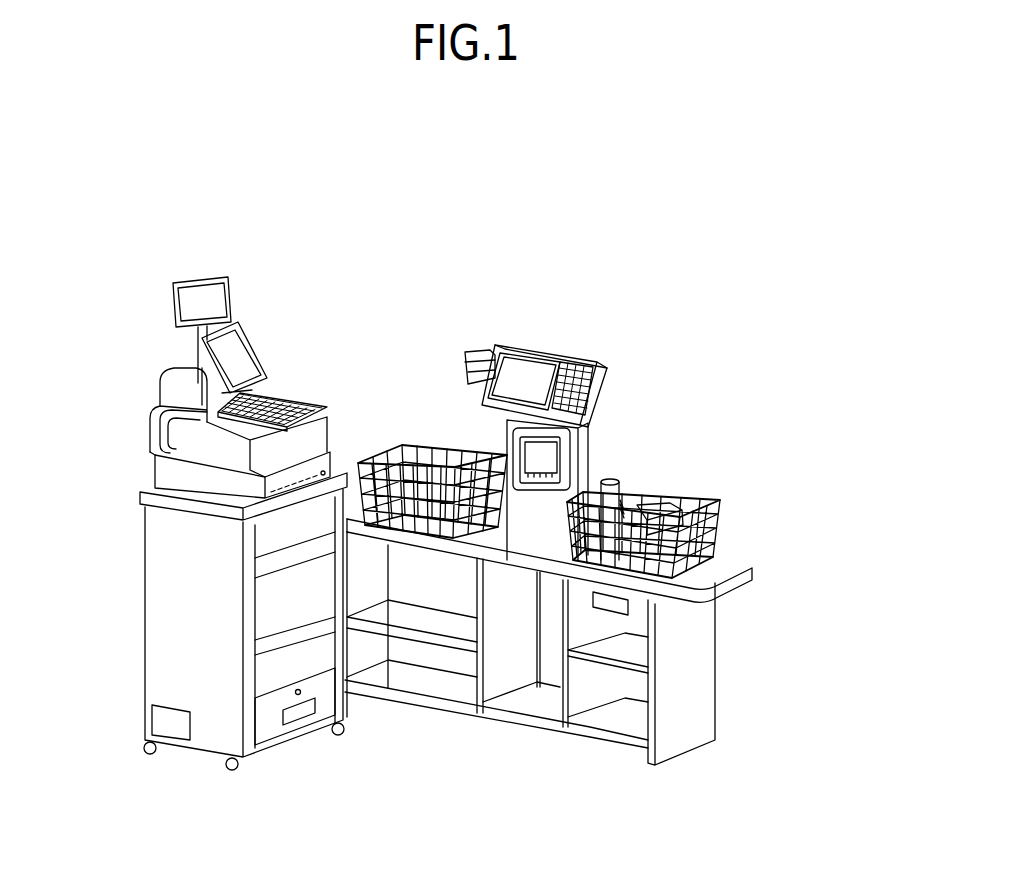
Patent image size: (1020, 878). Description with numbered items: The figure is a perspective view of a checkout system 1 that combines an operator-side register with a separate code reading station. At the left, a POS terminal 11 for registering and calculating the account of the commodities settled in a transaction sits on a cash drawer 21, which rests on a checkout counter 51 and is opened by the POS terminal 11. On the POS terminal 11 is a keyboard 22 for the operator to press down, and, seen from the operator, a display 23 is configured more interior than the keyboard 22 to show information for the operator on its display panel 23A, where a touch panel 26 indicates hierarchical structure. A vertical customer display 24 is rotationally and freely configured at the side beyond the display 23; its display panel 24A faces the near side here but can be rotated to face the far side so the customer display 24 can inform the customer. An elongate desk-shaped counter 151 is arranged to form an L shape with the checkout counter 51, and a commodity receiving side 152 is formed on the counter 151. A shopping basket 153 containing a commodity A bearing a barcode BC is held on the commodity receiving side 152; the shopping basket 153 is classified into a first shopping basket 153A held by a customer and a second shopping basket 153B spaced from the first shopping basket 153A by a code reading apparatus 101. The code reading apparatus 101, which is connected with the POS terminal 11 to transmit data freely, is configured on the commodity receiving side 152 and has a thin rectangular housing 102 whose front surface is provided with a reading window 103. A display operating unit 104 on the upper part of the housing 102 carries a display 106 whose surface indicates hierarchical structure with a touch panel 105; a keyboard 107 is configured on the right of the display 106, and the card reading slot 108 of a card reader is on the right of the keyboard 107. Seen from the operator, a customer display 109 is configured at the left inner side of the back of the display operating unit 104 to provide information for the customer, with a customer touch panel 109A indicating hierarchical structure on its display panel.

The checkout system 1 is at (105, 300).
The POS terminal 11 is at (125, 398).
The cash drawer 21 is at (163, 470).
The keyboard 22 is at (302, 390).
The display 23 is at (262, 320).
The display panel 23A is at (276, 335).
The customer display 24 is at (200, 282).
The display panel 24A is at (190, 288).
The touch panel 26 is at (182, 370).
The checkout counter 51 is at (160, 617).
The code reading apparatus 101 is at (470, 258).
The housing 102 is at (527, 512).
The reading window 103 is at (530, 458).
The display operating unit 104 is at (521, 350).
The touch panel 105 is at (540, 352).
The display 106 is at (562, 354).
The keyboard 107 is at (598, 350).
The card reading slot 108 is at (612, 352).
The customer display 109 is at (470, 352).
The customer touch panel 109A is at (480, 366).
The counter 151 is at (703, 690).
The commodity receiving side 152 is at (752, 570).
The shopping basket 153 is at (722, 488).
The first shopping basket 153A is at (730, 508).
The second shopping basket 153B is at (388, 448).
The commodity A is at (613, 482).
The barcode BC is at (624, 502).